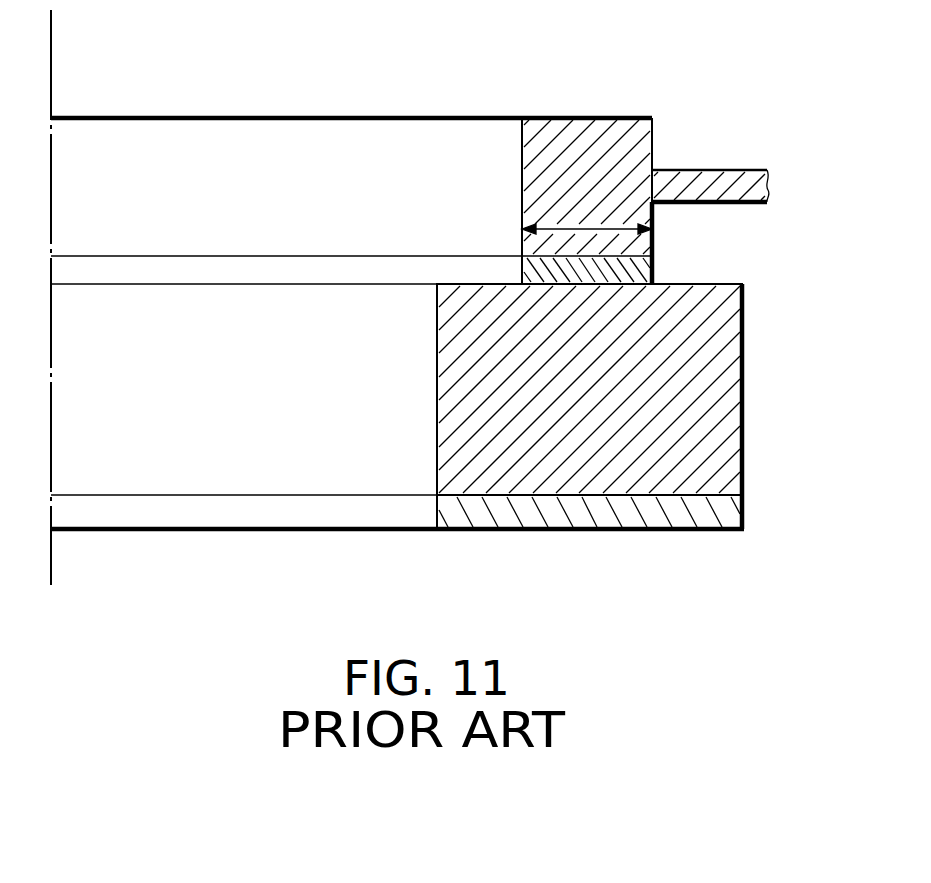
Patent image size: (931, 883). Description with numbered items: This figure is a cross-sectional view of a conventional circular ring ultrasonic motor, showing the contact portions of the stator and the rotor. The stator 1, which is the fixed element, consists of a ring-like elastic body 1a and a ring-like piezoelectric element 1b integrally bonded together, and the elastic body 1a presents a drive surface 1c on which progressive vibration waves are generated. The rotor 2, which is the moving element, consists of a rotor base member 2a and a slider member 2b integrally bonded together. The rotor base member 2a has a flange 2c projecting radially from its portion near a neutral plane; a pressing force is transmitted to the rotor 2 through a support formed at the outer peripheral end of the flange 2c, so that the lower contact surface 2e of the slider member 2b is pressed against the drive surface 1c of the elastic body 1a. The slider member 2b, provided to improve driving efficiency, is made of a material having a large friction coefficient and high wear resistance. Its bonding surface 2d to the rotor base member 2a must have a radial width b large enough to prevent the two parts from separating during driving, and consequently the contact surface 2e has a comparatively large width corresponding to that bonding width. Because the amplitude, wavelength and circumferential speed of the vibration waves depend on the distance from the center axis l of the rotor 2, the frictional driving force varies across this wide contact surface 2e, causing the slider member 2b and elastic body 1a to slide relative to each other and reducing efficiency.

The stator 1 is at (647, 372).
The elastic body 1a is at (727, 453).
The piezoelectric element 1b is at (727, 512).
The drive surface 1c is at (502, 282).
The rotor 2 is at (456, 240).
The rotor base member 2a is at (645, 247).
The slider member 2b is at (653, 272).
The flange 2c is at (737, 172).
The bonding surface 2d is at (548, 252).
The contact surface 2e is at (587, 283).
The center axis l is at (52, 68).